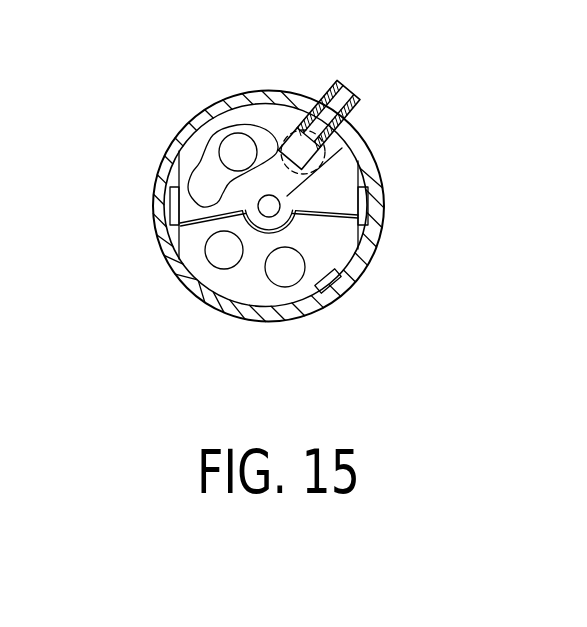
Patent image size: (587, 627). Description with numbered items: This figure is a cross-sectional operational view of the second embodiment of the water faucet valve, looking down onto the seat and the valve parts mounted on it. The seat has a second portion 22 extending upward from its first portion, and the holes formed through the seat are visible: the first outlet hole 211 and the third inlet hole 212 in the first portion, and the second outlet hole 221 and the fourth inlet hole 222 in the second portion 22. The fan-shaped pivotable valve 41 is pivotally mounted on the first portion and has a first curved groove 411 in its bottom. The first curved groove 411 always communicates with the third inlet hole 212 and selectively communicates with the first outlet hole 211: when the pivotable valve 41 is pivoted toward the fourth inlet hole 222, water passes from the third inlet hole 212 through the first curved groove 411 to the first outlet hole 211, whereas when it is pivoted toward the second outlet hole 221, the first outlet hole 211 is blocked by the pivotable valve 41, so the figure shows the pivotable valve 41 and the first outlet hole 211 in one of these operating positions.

The second portion 22 is at (231, 288).
The pivotable valve 41 is at (280, 115).
The first curved groove 411 is at (204, 174).
The first outlet hole 211 is at (326, 161).
The third inlet hole 212 is at (233, 150).
The second outlet hole 221 is at (213, 252).
The fourth inlet hole 222 is at (286, 271).